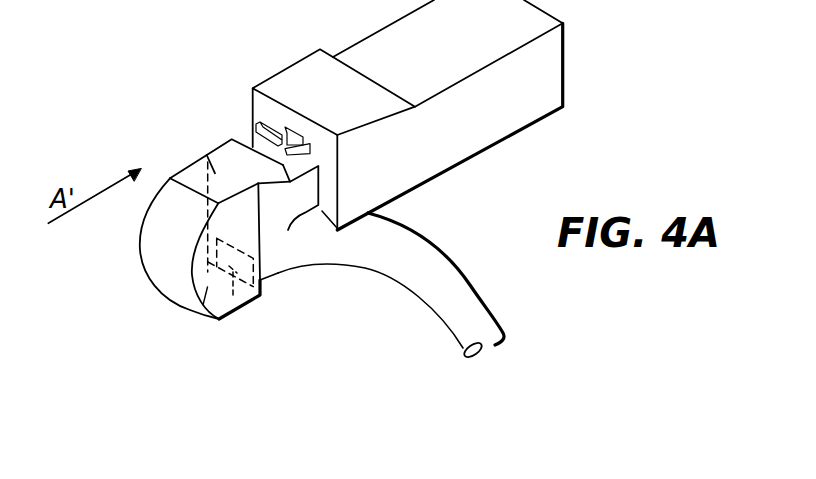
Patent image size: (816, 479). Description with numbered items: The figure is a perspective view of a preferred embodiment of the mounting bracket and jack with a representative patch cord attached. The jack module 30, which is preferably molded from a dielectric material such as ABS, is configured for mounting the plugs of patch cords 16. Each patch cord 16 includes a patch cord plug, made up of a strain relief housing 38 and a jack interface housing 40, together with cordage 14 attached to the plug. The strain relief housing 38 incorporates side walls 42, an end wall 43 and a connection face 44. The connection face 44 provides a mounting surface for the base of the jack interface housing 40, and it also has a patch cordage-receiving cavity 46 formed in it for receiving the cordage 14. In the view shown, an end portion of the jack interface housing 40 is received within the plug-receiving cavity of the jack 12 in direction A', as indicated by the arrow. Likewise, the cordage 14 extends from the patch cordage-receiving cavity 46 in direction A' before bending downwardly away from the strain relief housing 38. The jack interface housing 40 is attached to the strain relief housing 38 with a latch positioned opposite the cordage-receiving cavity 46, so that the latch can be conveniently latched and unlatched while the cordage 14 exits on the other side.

The jack 12 is at (320, 216).
The cordage 14 is at (432, 289).
The patch cord 16 is at (184, 245).
The jack module 30 is at (415, 163).
The strain relief housing 38 is at (204, 316).
The jack interface housing 40 is at (277, 208).
The side walls 42 is at (221, 300).
The end wall 43 is at (145, 242).
The connection face 44 is at (200, 153).
The patch cordage-receiving cavity 46 is at (230, 308).